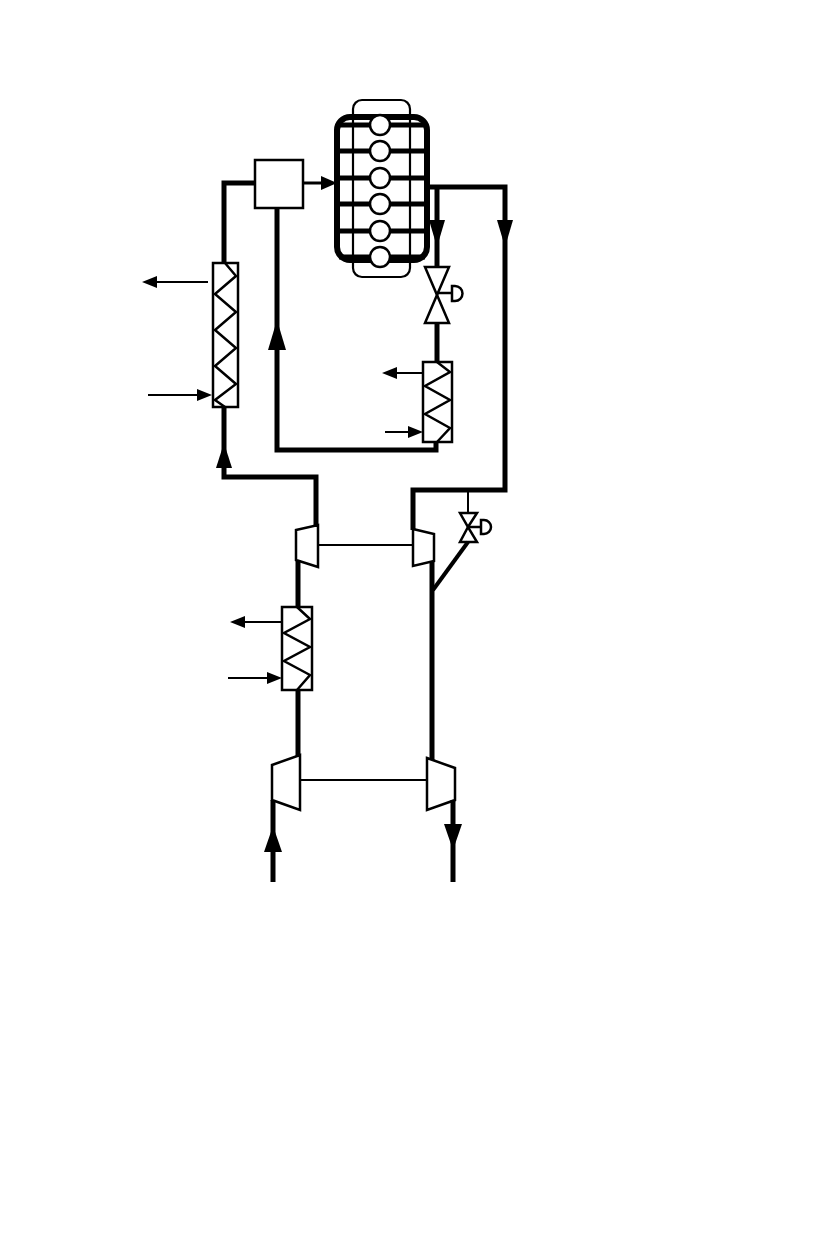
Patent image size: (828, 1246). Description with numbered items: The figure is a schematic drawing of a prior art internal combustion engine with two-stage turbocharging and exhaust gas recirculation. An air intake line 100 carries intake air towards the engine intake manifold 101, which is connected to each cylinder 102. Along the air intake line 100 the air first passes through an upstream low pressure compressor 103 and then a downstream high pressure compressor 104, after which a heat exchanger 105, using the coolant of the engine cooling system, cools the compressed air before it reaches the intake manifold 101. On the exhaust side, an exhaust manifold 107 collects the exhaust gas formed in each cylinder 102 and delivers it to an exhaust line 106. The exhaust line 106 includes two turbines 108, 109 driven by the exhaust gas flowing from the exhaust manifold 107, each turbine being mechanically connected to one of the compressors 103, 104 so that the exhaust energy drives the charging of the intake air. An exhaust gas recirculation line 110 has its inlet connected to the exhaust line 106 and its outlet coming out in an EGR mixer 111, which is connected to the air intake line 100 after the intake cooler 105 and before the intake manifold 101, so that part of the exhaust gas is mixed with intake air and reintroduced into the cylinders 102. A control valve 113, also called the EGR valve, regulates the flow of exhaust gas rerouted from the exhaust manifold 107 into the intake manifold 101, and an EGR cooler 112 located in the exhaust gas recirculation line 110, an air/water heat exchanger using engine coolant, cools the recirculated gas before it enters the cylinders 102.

The air intake line 100 is at (270, 853).
The engine intake manifold 101 is at (333, 133).
The cylinder 102 is at (383, 116).
The low pressure compressor 103 is at (282, 782).
The high pressure compressor 104 is at (298, 548).
The heat exchanger 105 is at (213, 344).
The exhaust line 106 is at (455, 862).
The exhaust manifold 107 is at (427, 172).
The turbine 108 is at (421, 548).
The turbine 109 is at (436, 780).
The exhaust gas recirculation line 110 is at (440, 348).
The EGR mixer 111 is at (279, 170).
The EGR cooler 112 is at (452, 420).
The control valve 113 is at (449, 272).